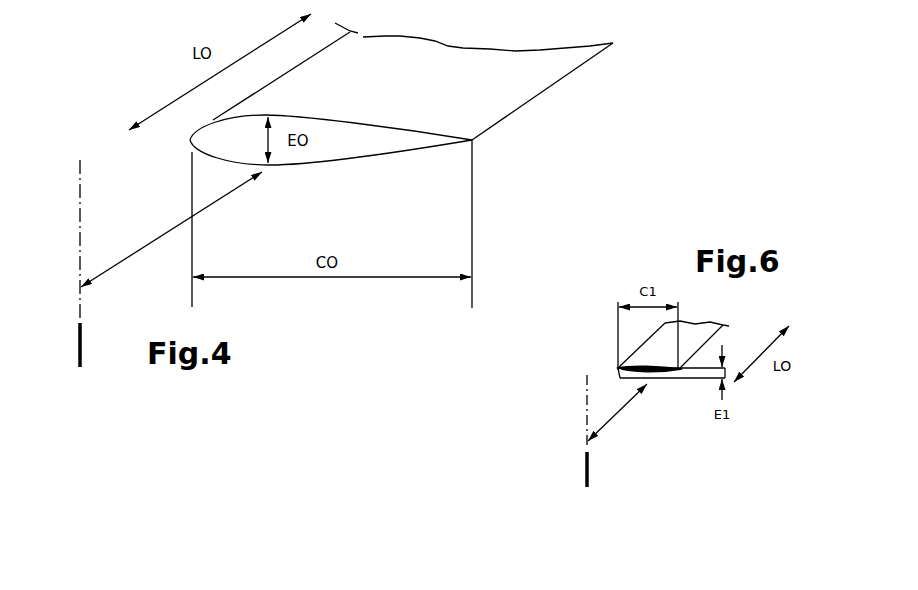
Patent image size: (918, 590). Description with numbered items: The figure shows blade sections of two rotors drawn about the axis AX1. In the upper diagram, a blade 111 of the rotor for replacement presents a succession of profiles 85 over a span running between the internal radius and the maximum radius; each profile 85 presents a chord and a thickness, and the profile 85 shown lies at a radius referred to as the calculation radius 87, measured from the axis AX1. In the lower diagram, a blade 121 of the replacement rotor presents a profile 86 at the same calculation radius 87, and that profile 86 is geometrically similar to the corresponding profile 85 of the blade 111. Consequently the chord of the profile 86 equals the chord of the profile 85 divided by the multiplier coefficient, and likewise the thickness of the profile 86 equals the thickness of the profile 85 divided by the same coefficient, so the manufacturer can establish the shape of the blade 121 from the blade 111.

In FIG. 4, the profile 85 is at (373, 123).
In FIG. 4, the calculation radius 87 is at (171, 229).
In FIG. 6, the calculation radius 87 is at (617, 412).
In FIG. 4, the blade 111 is at (513, 123).
In FIG. 6, the profile 86 is at (620, 374).
In FIG. 6, the blade 121 is at (680, 440).
In FIG. 4, the axis of rotation AX1 is at (78, 355).
In FIG. 6, the axis of rotation AX1 is at (583, 478).